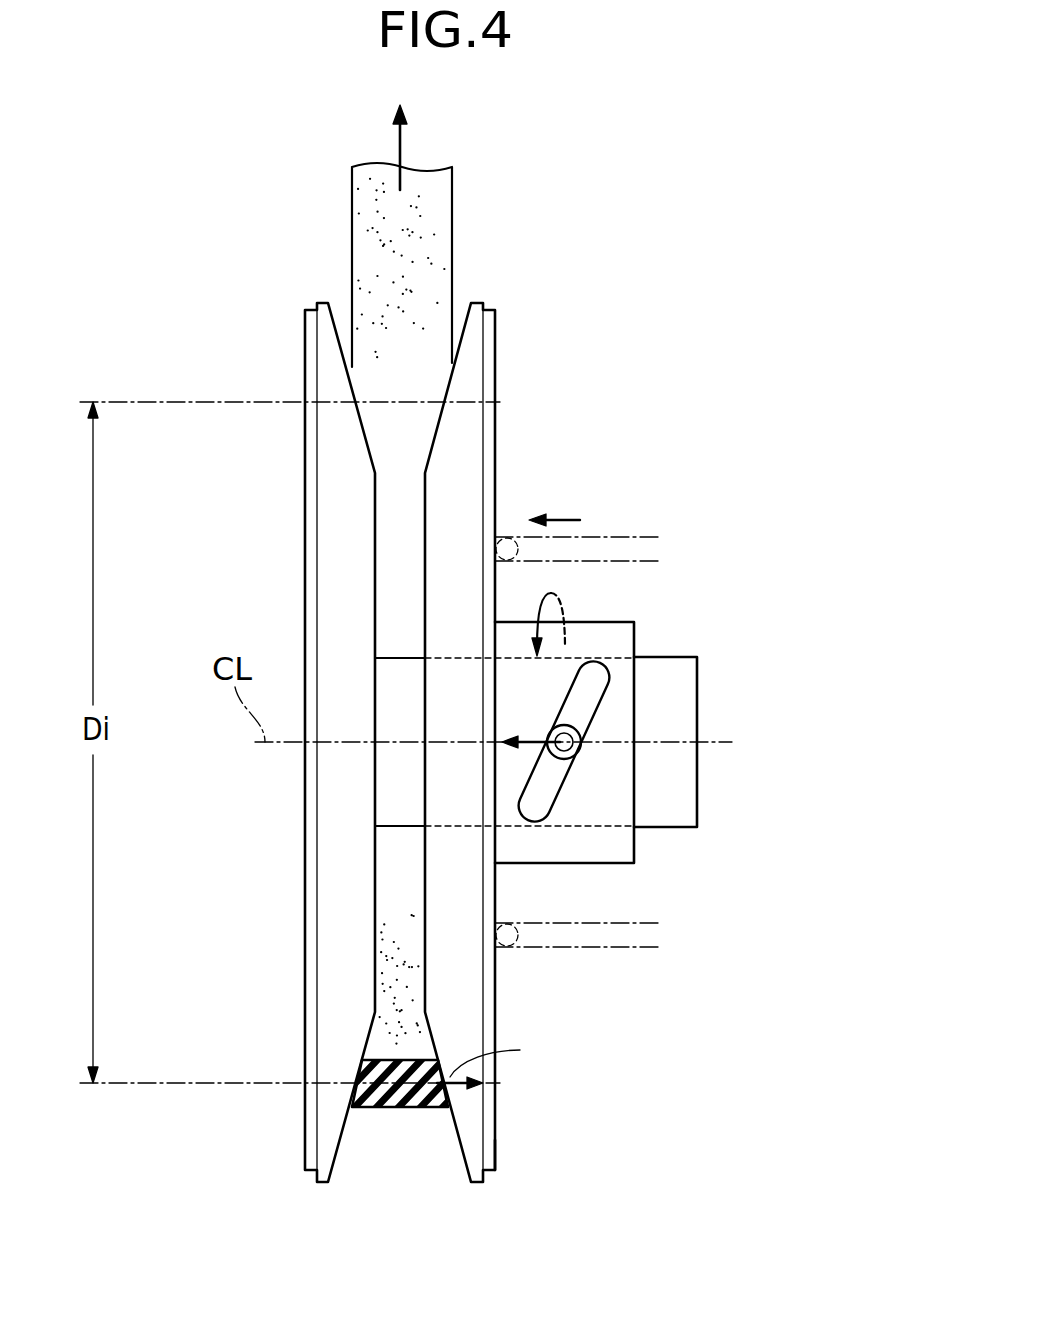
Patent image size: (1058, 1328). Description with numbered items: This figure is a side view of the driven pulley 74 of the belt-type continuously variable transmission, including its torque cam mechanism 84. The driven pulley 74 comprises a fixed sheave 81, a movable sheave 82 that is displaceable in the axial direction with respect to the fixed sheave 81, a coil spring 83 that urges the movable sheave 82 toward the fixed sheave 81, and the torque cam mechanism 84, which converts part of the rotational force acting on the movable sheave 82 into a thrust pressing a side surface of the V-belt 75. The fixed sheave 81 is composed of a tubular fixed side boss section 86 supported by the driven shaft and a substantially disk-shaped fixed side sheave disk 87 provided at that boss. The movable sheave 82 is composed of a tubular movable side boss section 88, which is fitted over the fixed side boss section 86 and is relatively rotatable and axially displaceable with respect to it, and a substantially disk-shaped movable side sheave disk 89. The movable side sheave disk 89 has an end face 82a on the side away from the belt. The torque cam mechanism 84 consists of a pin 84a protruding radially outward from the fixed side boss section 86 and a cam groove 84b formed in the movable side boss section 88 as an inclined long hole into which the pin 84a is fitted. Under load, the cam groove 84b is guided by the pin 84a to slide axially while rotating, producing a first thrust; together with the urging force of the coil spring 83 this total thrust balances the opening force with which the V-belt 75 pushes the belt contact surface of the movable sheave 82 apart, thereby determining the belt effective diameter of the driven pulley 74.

The driven pulley 74 is at (486, 677).
The V-belt 75 is at (405, 1102).
The fixed sheave 81 is at (290, 742).
The movable sheave 82 is at (612, 742).
The movable sheave end face 82a is at (495, 1145).
The coil spring 83 is at (648, 535).
The torque cam mechanism 84 is at (689, 741).
The pin 84a is at (577, 755).
The cam groove 84b is at (602, 690).
The fixed side boss section 86 is at (390, 775).
The fixed side sheave disk 87 is at (333, 912).
The movable side boss section 88 is at (578, 754).
The movable side sheave disk 89 is at (465, 993).